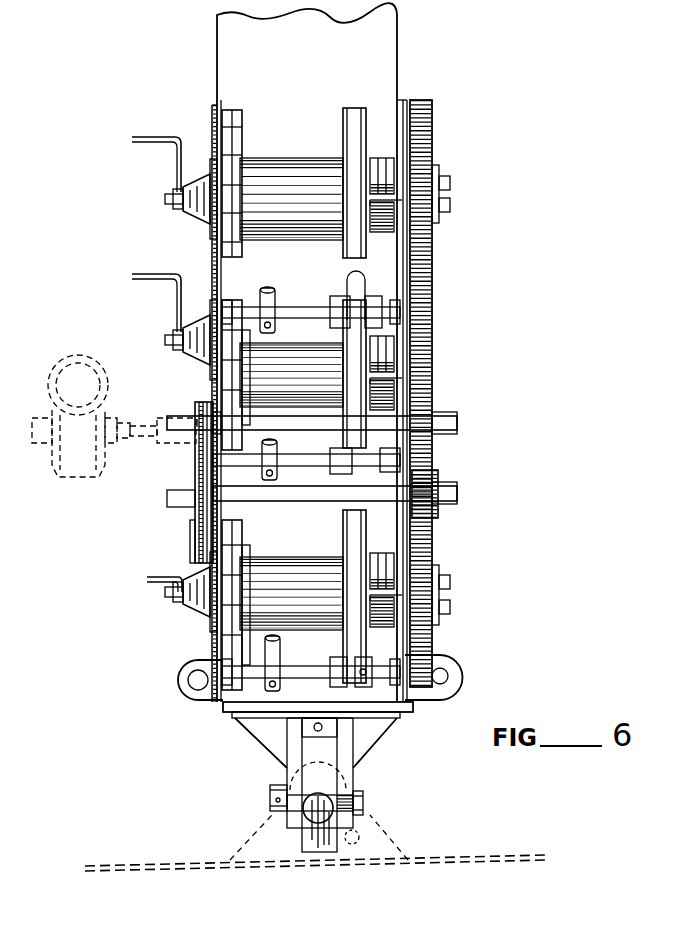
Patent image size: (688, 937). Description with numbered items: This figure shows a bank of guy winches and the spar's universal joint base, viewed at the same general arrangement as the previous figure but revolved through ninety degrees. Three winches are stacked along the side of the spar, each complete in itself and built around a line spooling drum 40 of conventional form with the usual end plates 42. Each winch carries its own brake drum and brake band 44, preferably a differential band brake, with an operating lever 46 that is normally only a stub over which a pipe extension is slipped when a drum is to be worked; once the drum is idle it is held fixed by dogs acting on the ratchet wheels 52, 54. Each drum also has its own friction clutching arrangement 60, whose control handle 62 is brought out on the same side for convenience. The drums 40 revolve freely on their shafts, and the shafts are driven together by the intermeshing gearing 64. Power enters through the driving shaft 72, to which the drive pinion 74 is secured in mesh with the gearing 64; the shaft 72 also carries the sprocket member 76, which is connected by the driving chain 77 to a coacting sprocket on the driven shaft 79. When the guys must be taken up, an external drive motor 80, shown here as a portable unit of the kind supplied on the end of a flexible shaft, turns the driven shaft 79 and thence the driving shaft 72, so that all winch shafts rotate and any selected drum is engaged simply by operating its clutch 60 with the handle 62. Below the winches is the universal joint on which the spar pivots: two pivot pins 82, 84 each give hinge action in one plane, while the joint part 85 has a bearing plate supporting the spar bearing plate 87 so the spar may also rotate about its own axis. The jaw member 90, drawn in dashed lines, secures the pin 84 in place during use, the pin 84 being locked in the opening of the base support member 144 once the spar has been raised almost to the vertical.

The line spooling drum 40 is at (286, 160).
The end plate 42 is at (360, 140).
The brake drum and brake band 44 is at (366, 672).
The operating lever 46 is at (276, 296).
The ratchet wheel 52 is at (230, 122).
The ratchet wheel 54 is at (233, 382).
The friction clutching arrangement 60 is at (185, 216).
The control handle 62 is at (156, 142).
The gearing 64 is at (426, 320).
The driving shaft 72 is at (458, 490).
The drive pinion 74 is at (436, 503).
The sprocket member 76 is at (196, 536).
The driving chain 77 is at (196, 462).
The driven shaft 79 is at (458, 422).
The external drive motor 80 is at (77, 470).
The pivot pin 82 is at (365, 800).
The pivot pin 84 is at (318, 830).
The universal joint part 85 is at (262, 725).
The spar bearing plate 87 is at (226, 704).
The jaw member 90 is at (273, 789).
The base support member 144 is at (270, 818).